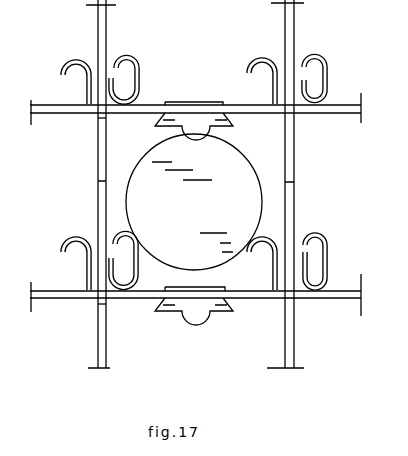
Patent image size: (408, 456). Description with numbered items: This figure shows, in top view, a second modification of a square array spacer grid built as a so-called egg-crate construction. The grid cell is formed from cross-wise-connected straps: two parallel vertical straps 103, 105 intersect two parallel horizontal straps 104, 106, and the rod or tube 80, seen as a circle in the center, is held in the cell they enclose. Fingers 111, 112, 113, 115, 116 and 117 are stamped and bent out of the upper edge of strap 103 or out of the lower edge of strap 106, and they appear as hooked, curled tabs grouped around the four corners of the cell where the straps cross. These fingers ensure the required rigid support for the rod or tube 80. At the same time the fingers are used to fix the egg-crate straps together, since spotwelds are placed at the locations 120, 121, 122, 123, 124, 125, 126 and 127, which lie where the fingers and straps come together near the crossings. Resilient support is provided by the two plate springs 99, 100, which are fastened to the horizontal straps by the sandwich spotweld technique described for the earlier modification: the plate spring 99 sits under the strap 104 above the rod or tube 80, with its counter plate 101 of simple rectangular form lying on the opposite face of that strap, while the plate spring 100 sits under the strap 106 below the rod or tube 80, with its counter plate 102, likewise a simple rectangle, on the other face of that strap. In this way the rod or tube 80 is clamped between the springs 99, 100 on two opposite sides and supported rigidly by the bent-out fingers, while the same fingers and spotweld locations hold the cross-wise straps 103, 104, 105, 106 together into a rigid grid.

The rod or tube 80 is at (239, 158).
The plate spring 99 is at (216, 135).
The plate spring 100 is at (168, 318).
The counter plate 101 is at (213, 101).
The counter plate 102 is at (190, 287).
The strap 103 is at (97, 352).
The strap 104 is at (80, 114).
The strap 105 is at (294, 353).
The strap 106 is at (80, 299).
The finger 111 is at (138, 239).
The finger 112 is at (82, 236).
The finger 113 is at (137, 58).
The finger 115 is at (264, 234).
The finger 116 is at (316, 57).
The finger 117 is at (271, 58).
The spotweld location 120 is at (306, 115).
The spotweld location 121 is at (275, 266).
The spotweld location 122 is at (306, 300).
The spotweld location 123 is at (275, 85).
The spotweld location 124 is at (117, 114).
The spotweld location 125 is at (89, 84).
The spotweld location 126 is at (117, 300).
The spotweld location 127 is at (89, 265).